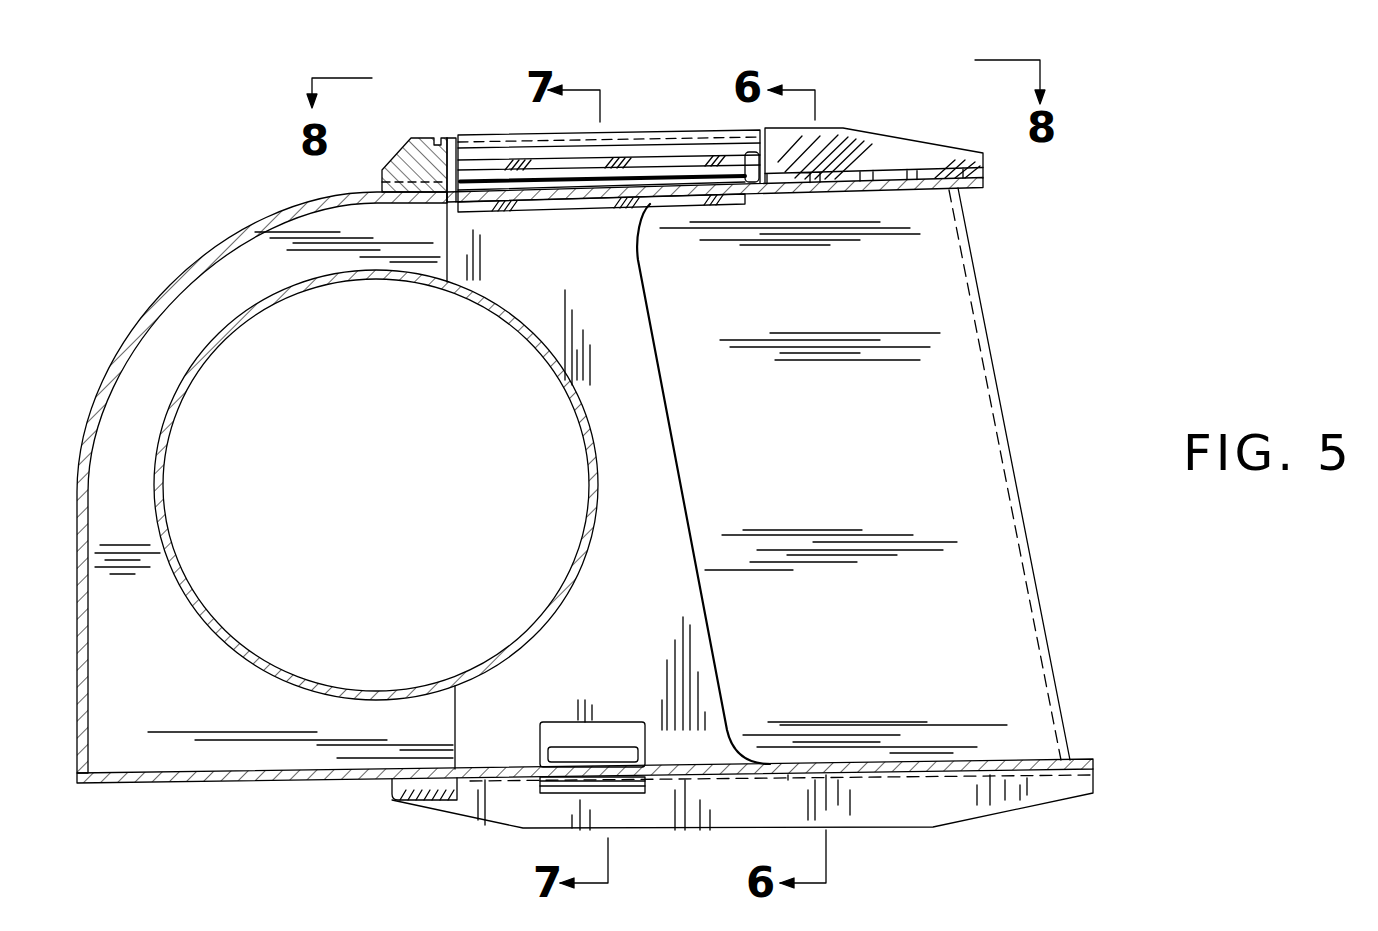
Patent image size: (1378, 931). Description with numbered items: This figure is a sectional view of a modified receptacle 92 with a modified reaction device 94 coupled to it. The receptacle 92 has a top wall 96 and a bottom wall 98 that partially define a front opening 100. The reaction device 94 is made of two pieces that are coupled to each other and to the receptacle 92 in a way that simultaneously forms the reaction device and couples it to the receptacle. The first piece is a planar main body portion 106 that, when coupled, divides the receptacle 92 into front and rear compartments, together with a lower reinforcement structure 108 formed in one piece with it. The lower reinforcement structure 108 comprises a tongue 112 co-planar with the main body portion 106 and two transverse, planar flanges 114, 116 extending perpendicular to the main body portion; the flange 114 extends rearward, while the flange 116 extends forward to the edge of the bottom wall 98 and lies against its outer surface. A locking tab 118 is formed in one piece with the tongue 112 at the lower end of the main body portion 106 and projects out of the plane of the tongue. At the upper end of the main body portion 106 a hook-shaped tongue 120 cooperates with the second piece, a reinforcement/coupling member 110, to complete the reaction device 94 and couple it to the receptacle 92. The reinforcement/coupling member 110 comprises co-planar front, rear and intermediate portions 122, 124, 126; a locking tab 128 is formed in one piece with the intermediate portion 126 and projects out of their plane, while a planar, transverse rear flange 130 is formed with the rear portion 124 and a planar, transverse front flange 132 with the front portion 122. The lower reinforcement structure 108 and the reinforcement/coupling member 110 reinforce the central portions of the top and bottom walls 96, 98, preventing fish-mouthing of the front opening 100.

The receptacle 92 is at (160, 263).
The reaction device 94 is at (642, 503).
The top wall 96 is at (899, 172).
The bottom wall 98 is at (947, 785).
The front opening 100 is at (1010, 373).
The main body portion 106 is at (675, 397).
The lower reinforcement structure 108 is at (436, 821).
The reinforcement/coupling member 110 is at (704, 108).
The tongue 112 is at (510, 802).
The transverse planar flange 114 is at (392, 797).
The transverse planar flange 116 is at (1047, 778).
The locking tab 118 is at (620, 795).
The hook-shaped tongue 120 is at (660, 132).
The front portion 122 is at (875, 150).
The rear portion 124 is at (433, 136).
The intermediate portion 126 is at (822, 132).
The locking tab 128 is at (572, 210).
The rear flange 130 is at (386, 168).
The front flange 132 is at (935, 168).